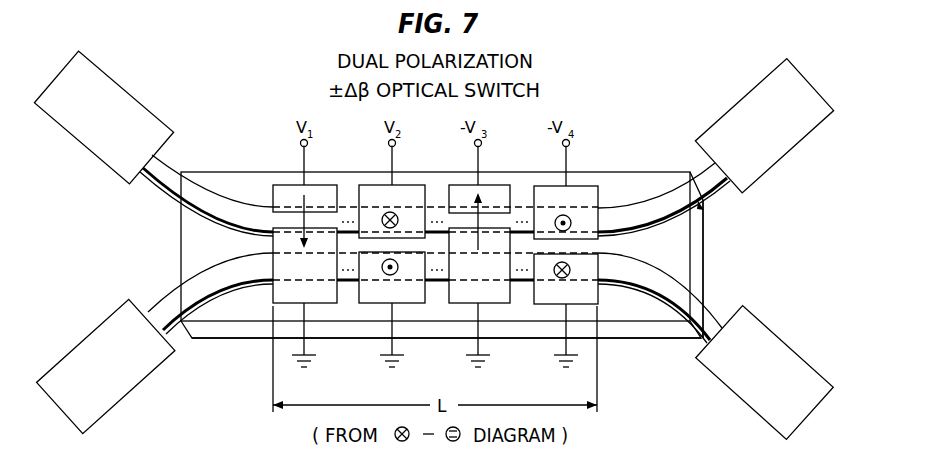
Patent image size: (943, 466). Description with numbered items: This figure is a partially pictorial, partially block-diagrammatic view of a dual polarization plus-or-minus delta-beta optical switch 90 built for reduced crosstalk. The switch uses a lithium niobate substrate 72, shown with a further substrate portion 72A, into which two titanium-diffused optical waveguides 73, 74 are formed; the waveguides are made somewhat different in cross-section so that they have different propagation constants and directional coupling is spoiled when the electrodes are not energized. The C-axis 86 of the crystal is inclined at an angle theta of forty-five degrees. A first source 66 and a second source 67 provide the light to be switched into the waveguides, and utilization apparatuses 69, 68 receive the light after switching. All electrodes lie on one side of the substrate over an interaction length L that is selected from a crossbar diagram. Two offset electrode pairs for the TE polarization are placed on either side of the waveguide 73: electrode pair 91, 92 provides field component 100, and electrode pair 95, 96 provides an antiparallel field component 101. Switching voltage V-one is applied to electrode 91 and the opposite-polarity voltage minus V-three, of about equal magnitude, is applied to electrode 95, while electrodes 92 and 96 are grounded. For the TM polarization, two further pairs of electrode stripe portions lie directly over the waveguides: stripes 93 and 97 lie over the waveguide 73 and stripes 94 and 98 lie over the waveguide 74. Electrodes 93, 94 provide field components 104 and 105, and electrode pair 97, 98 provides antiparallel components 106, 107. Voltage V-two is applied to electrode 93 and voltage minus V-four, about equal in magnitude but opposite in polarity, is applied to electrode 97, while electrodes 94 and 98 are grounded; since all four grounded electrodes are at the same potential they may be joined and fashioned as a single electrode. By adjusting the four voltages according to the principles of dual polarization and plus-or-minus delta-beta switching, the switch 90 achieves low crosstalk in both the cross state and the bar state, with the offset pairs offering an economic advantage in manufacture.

The source 66 is at (126, 91).
The source 67 is at (128, 394).
The utilization apparatus 68 is at (742, 402).
The utilization apparatus 69 is at (738, 103).
The substrate 72 is at (620, 338).
The substrate bottom surface 72A is at (662, 318).
The waveguide 73 is at (166, 162).
The waveguide 74 is at (168, 326).
The C-axis 86 is at (700, 206).
The ±Δβ optical switch 90 is at (255, 102).
The electrode 91 is at (287, 189).
The electrode 92 is at (276, 298).
The electrode 93 is at (373, 190).
The electrode 94 is at (376, 298).
The electrode 95 is at (459, 190).
The electrode 96 is at (458, 298).
The electrode 97 is at (544, 192).
The electrode 98 is at (548, 299).
The field component 100 is at (303, 197).
The antiparallel field component 101 is at (478, 244).
The field component 104 is at (384, 211).
The field component 105 is at (398, 271).
The antiparallel field component 106 is at (557, 214).
The antiparallel field component 107 is at (567, 278).